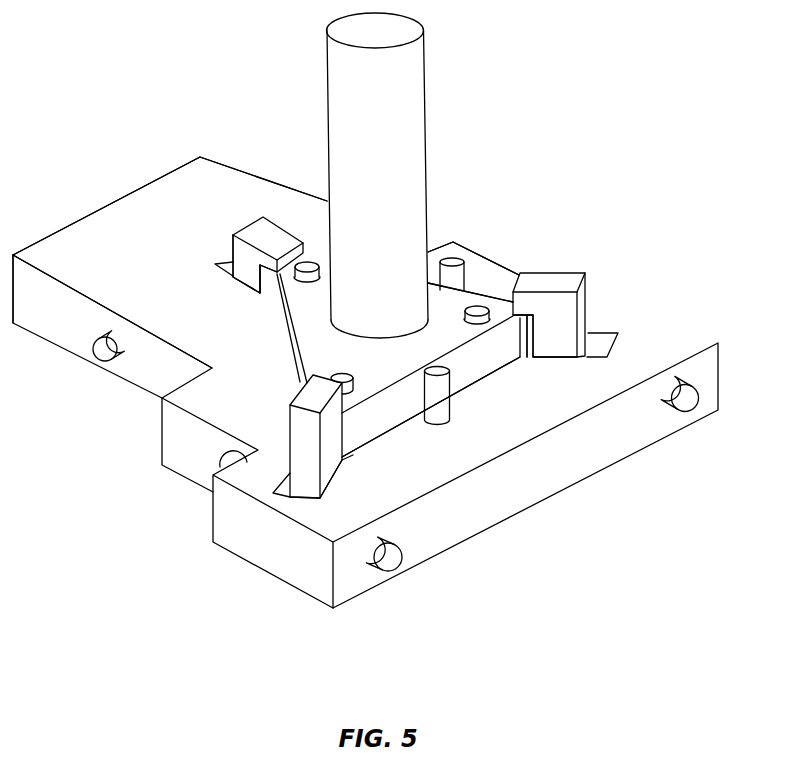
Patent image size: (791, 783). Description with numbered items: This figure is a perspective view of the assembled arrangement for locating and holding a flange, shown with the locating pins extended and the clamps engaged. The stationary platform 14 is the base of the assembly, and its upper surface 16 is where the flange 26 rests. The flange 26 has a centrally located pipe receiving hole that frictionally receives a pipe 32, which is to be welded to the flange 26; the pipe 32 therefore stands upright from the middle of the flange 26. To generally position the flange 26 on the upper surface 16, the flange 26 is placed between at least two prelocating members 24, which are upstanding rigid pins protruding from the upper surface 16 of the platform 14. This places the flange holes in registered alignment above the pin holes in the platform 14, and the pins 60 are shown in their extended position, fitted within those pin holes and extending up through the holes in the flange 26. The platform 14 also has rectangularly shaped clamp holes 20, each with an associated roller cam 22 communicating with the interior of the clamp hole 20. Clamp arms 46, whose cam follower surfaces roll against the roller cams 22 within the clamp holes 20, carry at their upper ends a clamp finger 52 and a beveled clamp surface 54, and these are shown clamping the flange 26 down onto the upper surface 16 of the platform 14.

The stationary platform 14 is at (530, 487).
The upper surface 16 is at (98, 224).
The clamp hole 20 is at (216, 268).
The roller cam 22 is at (103, 347).
The prelocating member 24 is at (455, 255).
The flange 26 is at (455, 300).
The pipe 32 is at (408, 125).
The clamp arm 46 is at (258, 235).
The clamp finger 52 is at (276, 230).
The beveled clamp surface 54 is at (267, 272).
The pin 60 is at (306, 280).